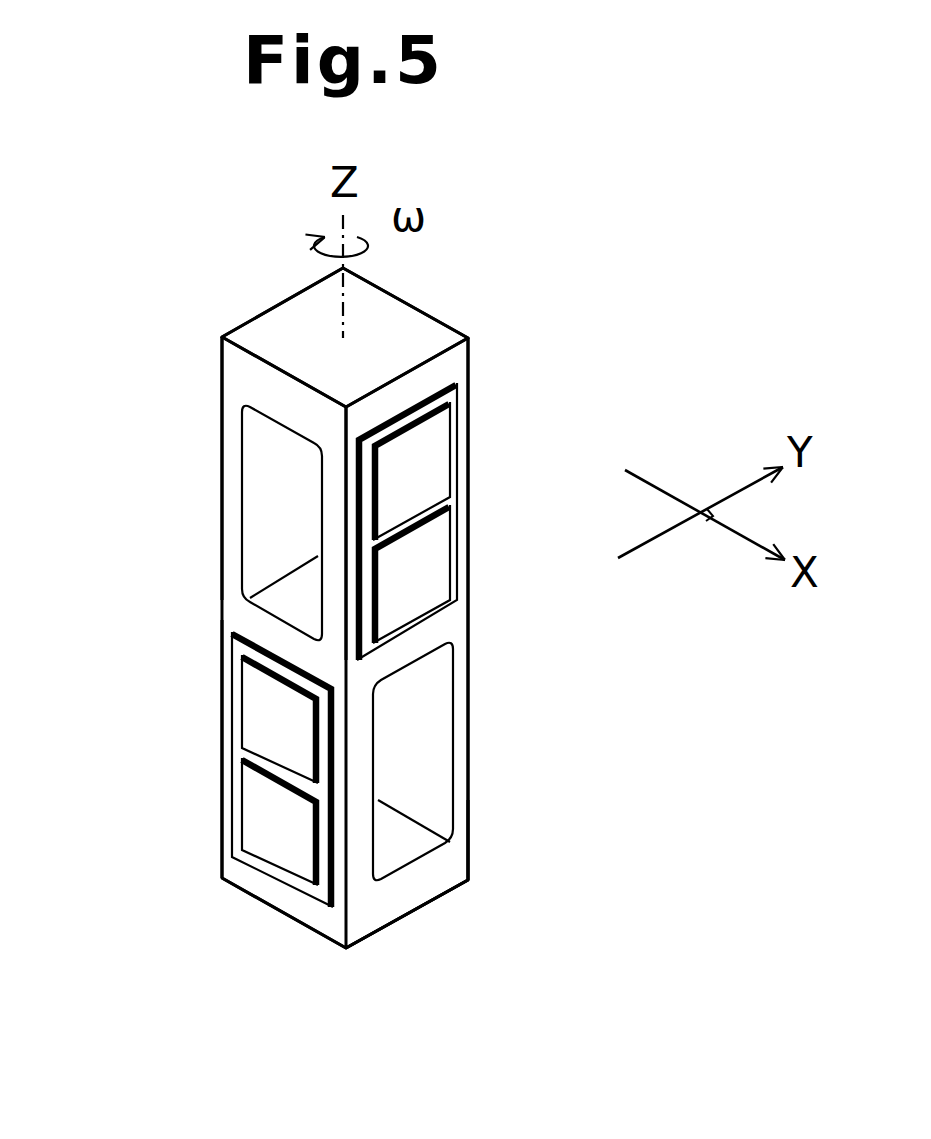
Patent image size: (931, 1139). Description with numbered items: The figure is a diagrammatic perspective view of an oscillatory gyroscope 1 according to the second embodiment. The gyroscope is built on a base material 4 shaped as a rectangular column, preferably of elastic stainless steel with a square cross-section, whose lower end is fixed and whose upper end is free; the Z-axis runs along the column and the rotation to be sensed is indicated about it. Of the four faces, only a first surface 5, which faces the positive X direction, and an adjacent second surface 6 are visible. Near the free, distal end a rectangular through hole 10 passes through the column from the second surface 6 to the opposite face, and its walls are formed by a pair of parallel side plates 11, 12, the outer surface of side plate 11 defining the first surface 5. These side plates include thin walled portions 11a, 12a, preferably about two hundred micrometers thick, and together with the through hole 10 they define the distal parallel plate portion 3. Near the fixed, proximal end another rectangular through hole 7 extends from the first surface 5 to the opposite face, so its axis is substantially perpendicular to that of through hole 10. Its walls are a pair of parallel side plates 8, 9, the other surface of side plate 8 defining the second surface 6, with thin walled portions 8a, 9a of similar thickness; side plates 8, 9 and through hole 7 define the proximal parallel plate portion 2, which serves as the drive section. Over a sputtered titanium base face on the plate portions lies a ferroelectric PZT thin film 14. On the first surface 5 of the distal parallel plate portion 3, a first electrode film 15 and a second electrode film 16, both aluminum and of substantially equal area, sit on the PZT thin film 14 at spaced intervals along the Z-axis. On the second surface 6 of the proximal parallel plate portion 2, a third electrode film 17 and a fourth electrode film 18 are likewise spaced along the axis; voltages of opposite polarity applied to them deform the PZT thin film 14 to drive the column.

The oscillatory gyroscope 1 is at (533, 297).
The parallel plate portion 2 is at (141, 749).
The parallel plate portion 3 is at (185, 488).
The base material 4 is at (563, 795).
The first surface 5 is at (443, 885).
The second surface 6 is at (236, 368).
The through hole 7 is at (440, 757).
The side plate 8 is at (225, 832).
The thin walled portion 8a is at (452, 761).
The side plate 9 is at (463, 682).
The thin walled portion 9a is at (472, 808).
The through hole 10 is at (262, 548).
The side plate 11 is at (460, 517).
The thin walled portion 11a is at (334, 533).
The side plate 12 is at (222, 427).
The thin walled portion 12a is at (197, 523).
The PZT thin film 14 is at (356, 680).
The first electrode film 15 is at (447, 404).
The second electrode film 16 is at (440, 577).
The third electrode film 17 is at (270, 848).
The fourth electrode film 18 is at (262, 728).